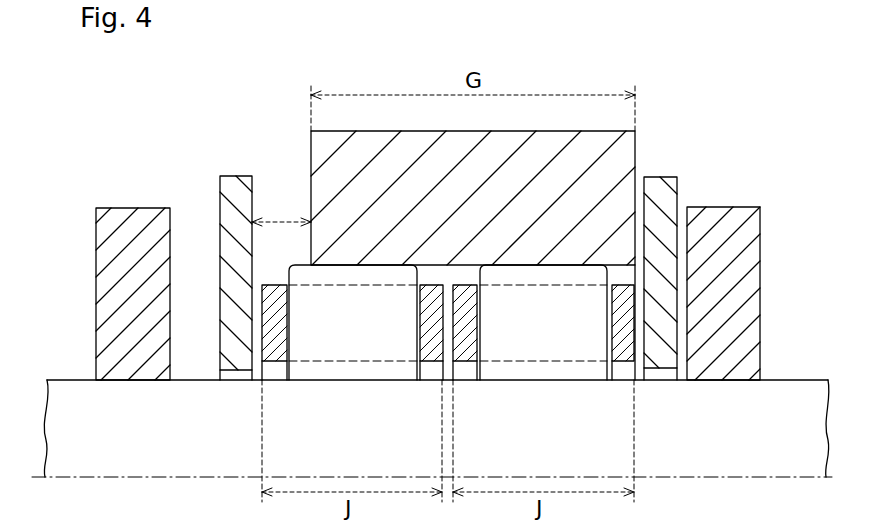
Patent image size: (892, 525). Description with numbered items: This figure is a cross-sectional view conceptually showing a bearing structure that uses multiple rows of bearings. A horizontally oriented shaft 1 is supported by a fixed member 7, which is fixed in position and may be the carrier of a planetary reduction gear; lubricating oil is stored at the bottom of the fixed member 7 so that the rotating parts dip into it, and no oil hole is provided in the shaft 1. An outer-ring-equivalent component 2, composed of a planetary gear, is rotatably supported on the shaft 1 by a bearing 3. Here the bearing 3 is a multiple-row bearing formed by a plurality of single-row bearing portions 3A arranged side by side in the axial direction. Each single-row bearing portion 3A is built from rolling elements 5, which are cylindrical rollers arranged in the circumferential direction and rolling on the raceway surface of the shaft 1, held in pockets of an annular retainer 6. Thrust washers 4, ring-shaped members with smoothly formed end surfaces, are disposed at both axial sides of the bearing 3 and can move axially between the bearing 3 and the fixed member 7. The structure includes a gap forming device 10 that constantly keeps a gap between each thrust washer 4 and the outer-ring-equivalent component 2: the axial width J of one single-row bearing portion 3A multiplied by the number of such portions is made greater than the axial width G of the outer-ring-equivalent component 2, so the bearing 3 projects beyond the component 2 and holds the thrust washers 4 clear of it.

The shaft 1 is at (82, 382).
The outer-ring-equivalent component 2 is at (320, 152).
The bearing 3 is at (455, 278).
The single-row bearing portion 3A is at (253, 134).
The thrust washer 4 is at (220, 193).
The rolling element 5 is at (353, 273).
The annular retainer 6 is at (268, 286).
The fixed member 7 is at (100, 238).
The gap forming device 10 is at (272, 72).